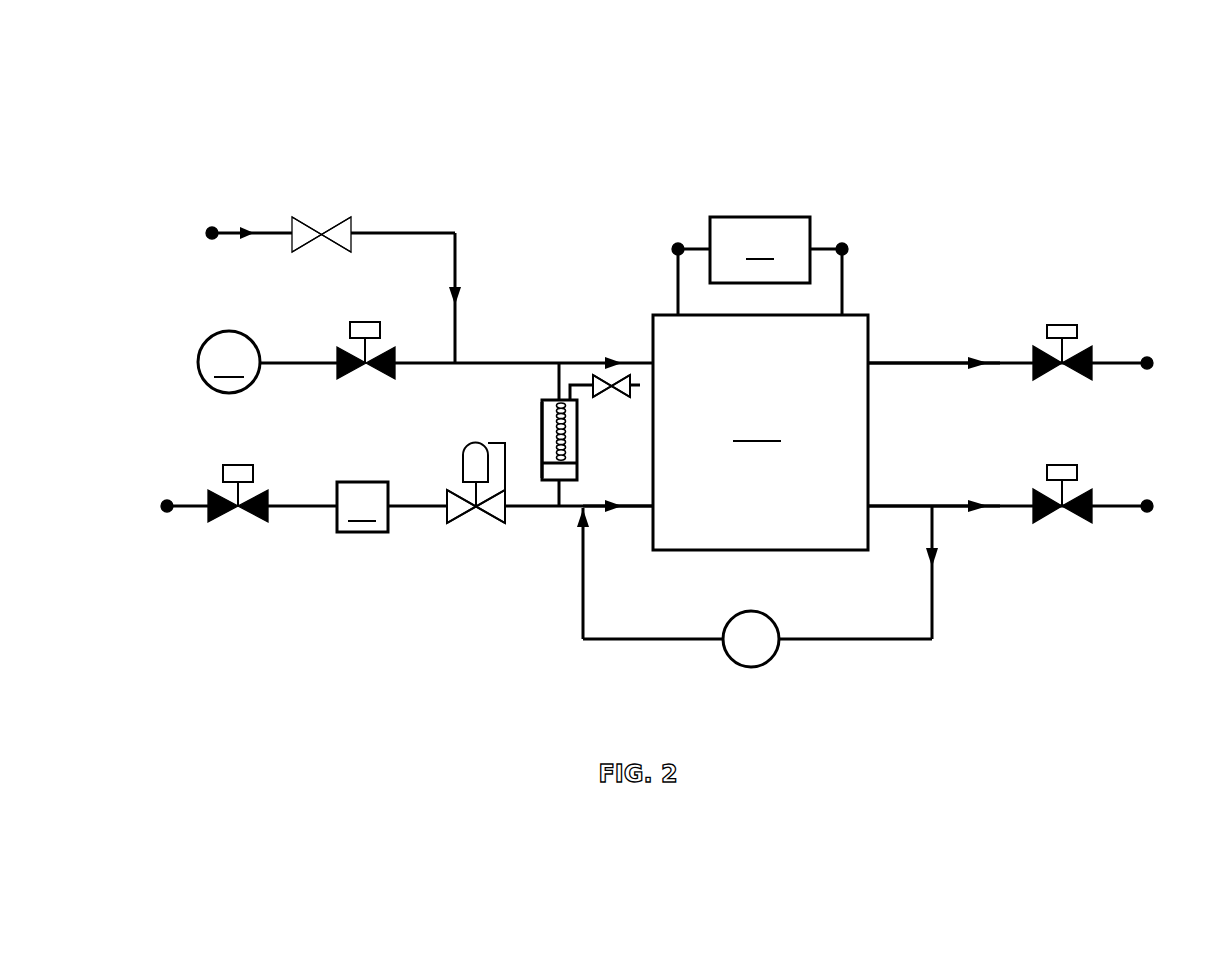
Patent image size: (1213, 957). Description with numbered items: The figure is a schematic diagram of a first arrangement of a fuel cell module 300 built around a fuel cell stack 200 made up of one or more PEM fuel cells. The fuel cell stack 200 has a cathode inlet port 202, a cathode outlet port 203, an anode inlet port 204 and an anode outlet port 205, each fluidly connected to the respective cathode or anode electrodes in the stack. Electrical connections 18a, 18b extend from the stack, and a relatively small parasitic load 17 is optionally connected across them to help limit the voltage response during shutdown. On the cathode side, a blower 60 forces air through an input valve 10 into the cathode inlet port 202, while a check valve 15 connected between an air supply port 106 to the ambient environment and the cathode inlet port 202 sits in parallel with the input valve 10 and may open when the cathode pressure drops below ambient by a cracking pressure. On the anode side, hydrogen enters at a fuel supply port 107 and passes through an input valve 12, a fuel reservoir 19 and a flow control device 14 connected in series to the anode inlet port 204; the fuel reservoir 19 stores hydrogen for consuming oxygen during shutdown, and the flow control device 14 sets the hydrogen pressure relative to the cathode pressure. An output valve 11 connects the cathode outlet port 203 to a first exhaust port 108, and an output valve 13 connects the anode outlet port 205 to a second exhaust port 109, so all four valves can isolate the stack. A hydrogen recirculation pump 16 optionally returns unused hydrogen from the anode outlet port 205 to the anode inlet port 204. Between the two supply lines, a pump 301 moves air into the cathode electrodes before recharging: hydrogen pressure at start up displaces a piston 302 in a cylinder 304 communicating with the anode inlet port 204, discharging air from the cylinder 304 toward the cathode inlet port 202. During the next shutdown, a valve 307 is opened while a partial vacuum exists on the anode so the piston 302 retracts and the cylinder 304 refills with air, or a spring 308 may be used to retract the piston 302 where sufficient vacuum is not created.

The fuel cell module 300 is at (512, 103).
The air supply port 106 is at (212, 227).
The check valve 15 is at (332, 228).
The input valve 10 is at (350, 330).
The blower 60 is at (229, 362).
The pump 301 is at (526, 384).
The spring 308 is at (557, 423).
The piston 302 is at (570, 458).
The cylinder 304 is at (540, 453).
The valve 307 is at (595, 378).
The cathode inlet port 202 is at (636, 360).
The input valve 12 is at (222, 472).
The fuel supply port 107 is at (165, 513).
The fuel reservoir 19 is at (362, 507).
The flow control device 14 is at (462, 467).
The anode inlet port 204 is at (638, 508).
The hydrogen recirculation pump 16 is at (770, 660).
The fuel cell stack 200 is at (760, 432).
The parasitic load 17 is at (760, 250).
The electrical connection 18b is at (676, 270).
The electrical connection 18a is at (843, 283).
The cathode outlet port 203 is at (932, 363).
The anode outlet port 205 is at (950, 506).
The output valve 11 is at (1063, 323).
The first exhaust port 108 is at (1147, 357).
The output valve 13 is at (1077, 472).
The second exhaust port 109 is at (1147, 500).